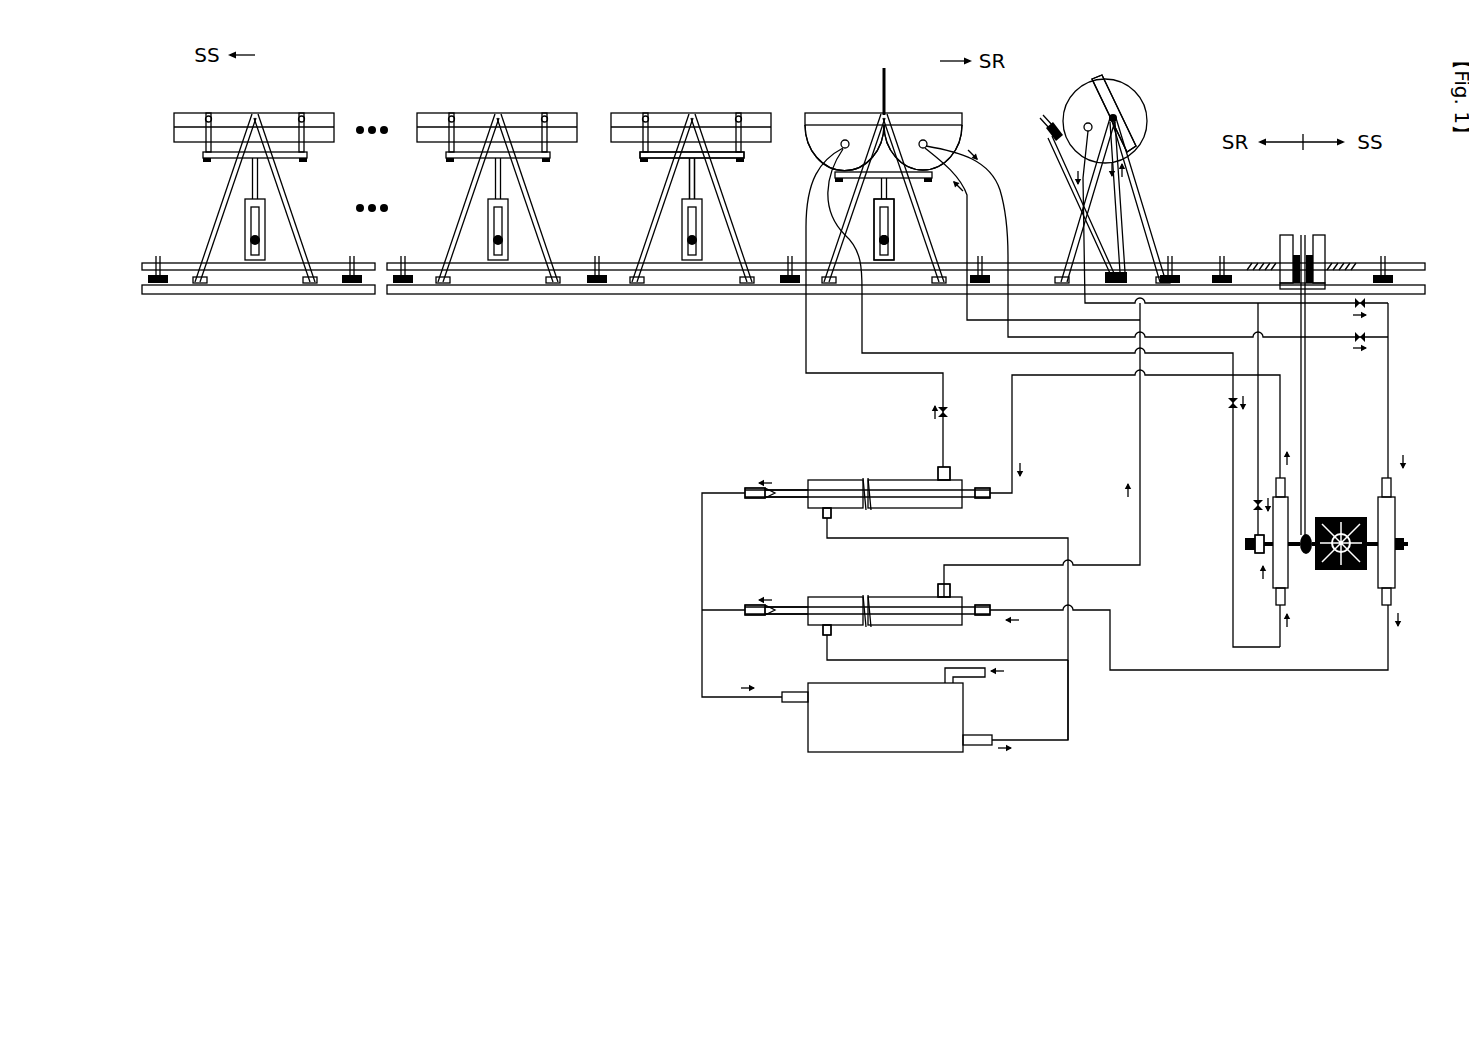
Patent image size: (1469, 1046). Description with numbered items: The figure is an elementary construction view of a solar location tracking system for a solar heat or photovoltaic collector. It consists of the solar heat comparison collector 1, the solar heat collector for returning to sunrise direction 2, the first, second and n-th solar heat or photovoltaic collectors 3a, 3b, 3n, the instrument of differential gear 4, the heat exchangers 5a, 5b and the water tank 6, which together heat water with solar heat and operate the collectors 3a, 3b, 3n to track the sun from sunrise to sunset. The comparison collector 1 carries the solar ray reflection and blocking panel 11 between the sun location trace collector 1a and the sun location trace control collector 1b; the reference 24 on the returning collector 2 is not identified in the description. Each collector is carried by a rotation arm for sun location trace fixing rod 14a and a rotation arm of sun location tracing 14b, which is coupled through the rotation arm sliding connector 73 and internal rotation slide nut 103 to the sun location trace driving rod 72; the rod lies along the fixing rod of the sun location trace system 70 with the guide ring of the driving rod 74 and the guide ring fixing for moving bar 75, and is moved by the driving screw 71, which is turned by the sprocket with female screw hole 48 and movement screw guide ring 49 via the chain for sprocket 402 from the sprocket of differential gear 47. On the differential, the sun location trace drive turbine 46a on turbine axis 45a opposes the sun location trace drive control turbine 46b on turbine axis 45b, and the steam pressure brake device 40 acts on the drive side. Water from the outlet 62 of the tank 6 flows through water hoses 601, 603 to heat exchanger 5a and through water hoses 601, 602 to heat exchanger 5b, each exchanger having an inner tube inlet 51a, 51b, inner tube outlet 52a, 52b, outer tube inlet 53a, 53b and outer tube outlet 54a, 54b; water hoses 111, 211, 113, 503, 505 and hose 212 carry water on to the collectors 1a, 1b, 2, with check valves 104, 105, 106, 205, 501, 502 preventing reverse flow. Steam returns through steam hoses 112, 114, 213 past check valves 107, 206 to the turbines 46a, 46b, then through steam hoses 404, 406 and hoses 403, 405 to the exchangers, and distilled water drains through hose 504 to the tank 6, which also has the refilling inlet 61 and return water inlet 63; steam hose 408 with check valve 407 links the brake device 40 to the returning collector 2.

The solar heat comparison collector 1 is at (893, 113).
The sun location trace collector 1a is at (825, 137).
The sun location trace control collector 1b is at (943, 137).
The solar ray reflection and blocking panel 11 is at (884, 74).
The solar heat collector for returning to sunrise direction 2 is at (1075, 100).
The suction pipe crossing 24 is at (1092, 207).
The check valve 205 is at (1130, 152).
The steam (or gas) hose 212 is at (1125, 213).
The steam (or gas) hose 213 is at (1200, 303).
The n-th solar heat or photovoltaic collector 3n is at (280, 113).
The second solar heat or photovoltaic collector 3b is at (475, 113).
The first solar heat or photovoltaic collector 3a is at (668, 113).
The rotation arm for sun location trace fixing rod 14a is at (672, 160).
The rotation arm of sun location tracing 14b is at (690, 192).
The rotation arm sliding connector 73 is at (894, 207).
The internal rotation slide nut 103 is at (889, 240).
The fixing rod of the sun location trace system 70 is at (258, 287).
The driving screw 71 is at (1263, 263).
The sun location trace driving rod 72 is at (180, 263).
The guide ring of the driving rod 74 is at (403, 258).
The guide ring fixing for moving bar 75 is at (352, 283).
The check valve 106 is at (963, 182).
The water (or liquid) hose 111 is at (806, 355).
The steam (or gas) hose 112 is at (862, 338).
The water (or liquid) hose 113 is at (967, 313).
The steam (or gas) hose 114 is at (1005, 195).
The check valve 104 is at (950, 412).
The check valve 105 is at (1228, 403).
The check valve 107 is at (1368, 340).
The check valve 206 is at (1368, 308).
The water (or liquid) hose 211 is at (1140, 437).
The chain for sprocket 402 is at (1307, 398).
The water (or liquid) hose 403 is at (1078, 375).
The steam (or gas) hose 404 is at (1280, 643).
The water (or liquid) hose 405 is at (1390, 643).
The steam (or gas) hose 406 is at (1388, 382).
The check valve 407 is at (1252, 505).
The steam (or gas) hose 408 is at (1258, 441).
The instrument of differential gear 4 is at (1353, 517).
The steam pressure brake device 40 is at (1255, 553).
The turbine axis of the sun location trace drive turbine 45a is at (1245, 544).
The turbine axis of the sun location trace drive control turbine 45b is at (1408, 544).
The sun location trace drive turbine 46a is at (1278, 583).
The sun location trace drive control turbine 46b is at (1395, 503).
The sprocket of differential gear 47 is at (1305, 556).
The sprocket with female screw hole 48 is at (1303, 238).
The movement screw guide ring 49 is at (1318, 235).
The heat exchanger for the sun location trace collector 5a is at (887, 480).
The heat exchanger for the sun location trace control collector 5b is at (887, 597).
The inner tube inlet of the double pipe heat exchanger 51a is at (983, 498).
The inner tube inlet of the double pipe heat exchanger 51b is at (983, 615).
The inner tube outlet of the double pipe heat exchanger 52a is at (790, 498).
The inner tube outlet of the double pipe heat exchanger 52b is at (790, 615).
The outer tube inlet of the double pipe heat exchanger 53a is at (835, 517).
The outer tube inlet of the double pipe heat exchanger 53b is at (835, 634).
The outer tube outlet of the double pipe heat exchanger 54a is at (950, 470).
The outer tube outlet of the double pipe heat exchanger 54b is at (950, 587).
The check valve 501 is at (771, 490).
The check valve 502 is at (771, 607).
The water (or liquid) hose 503 is at (702, 548).
The water (or liquid) hose 504 is at (702, 650).
The water (or liquid) hose 505 is at (725, 614).
The water (or liquid) hose 601 is at (1068, 712).
The water (or liquid) hose 602 is at (1030, 660).
The water (or liquid) hose 603 is at (1040, 538).
The water (or liquid) tank 6 is at (885, 717).
The refilling inlet of water (or liquid) 61 is at (975, 677).
The outlet for water (or liquid) 62 is at (982, 745).
The return water (or liquid) inlet 63 is at (790, 702).